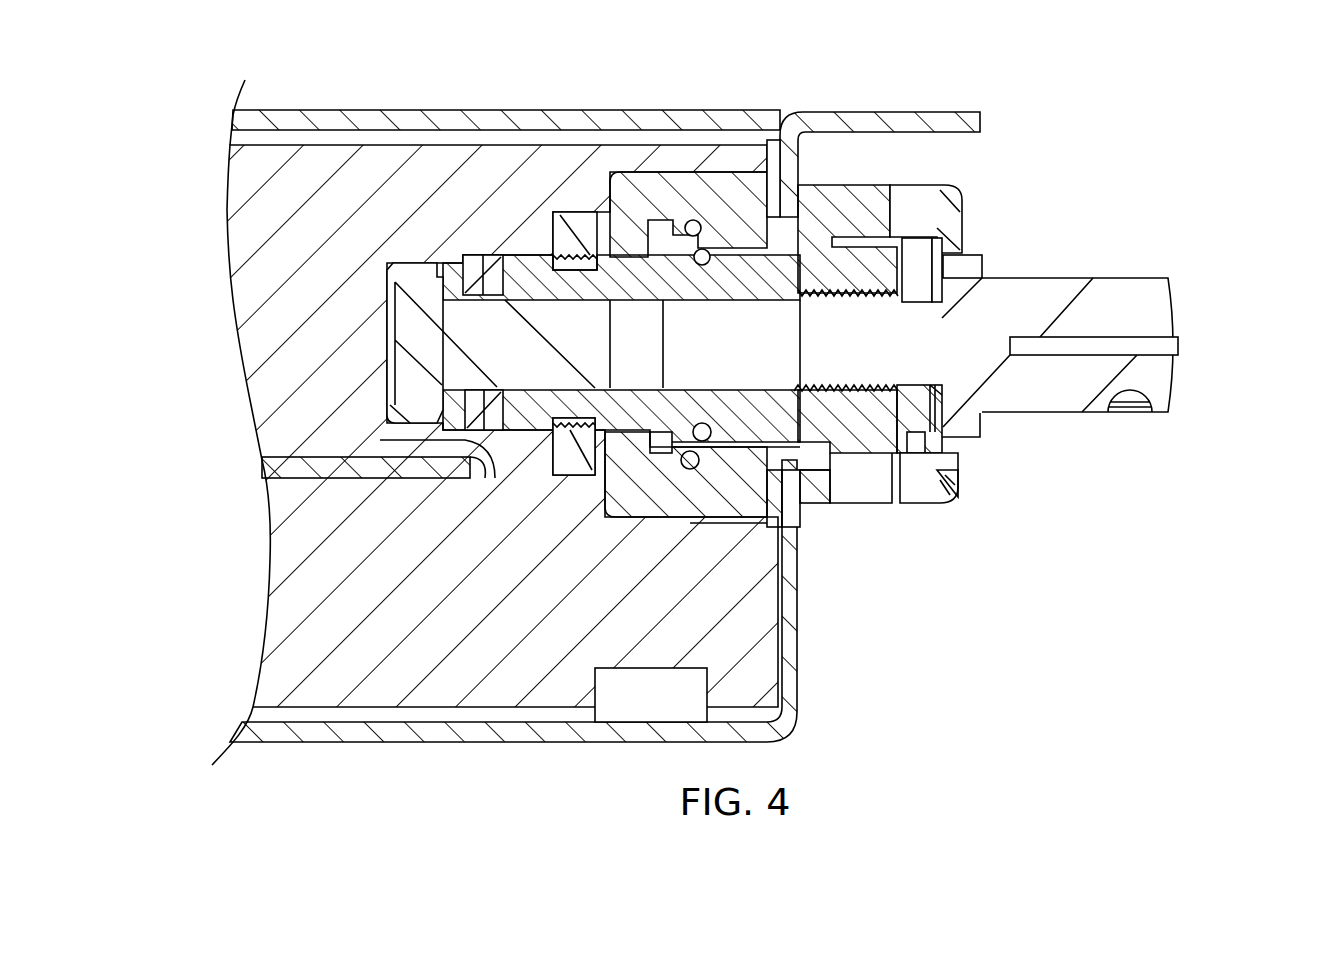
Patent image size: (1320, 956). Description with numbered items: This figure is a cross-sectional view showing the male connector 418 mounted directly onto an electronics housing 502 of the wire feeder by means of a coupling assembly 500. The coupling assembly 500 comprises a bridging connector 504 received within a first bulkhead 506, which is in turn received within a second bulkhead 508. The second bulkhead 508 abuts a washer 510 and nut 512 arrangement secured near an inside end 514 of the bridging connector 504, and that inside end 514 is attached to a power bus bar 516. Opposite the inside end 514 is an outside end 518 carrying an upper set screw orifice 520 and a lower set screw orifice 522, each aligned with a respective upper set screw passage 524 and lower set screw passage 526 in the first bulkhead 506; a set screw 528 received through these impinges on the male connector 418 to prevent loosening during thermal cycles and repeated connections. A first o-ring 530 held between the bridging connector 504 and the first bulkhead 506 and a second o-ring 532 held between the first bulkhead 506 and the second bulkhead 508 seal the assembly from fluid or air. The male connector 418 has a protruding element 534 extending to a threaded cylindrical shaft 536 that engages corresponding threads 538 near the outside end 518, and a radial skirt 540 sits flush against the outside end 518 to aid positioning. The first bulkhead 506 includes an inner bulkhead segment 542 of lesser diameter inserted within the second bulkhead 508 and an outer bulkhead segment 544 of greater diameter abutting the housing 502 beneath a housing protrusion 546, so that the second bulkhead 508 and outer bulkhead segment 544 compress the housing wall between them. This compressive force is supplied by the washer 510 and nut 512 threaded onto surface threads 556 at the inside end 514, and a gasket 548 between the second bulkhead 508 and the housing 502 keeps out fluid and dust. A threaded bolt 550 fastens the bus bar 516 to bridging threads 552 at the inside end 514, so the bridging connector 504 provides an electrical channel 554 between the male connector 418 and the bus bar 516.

The male connector 418 is at (1101, 327).
The coupling assembly 500 is at (986, 205).
The electronics housing 502 is at (800, 708).
The bridging connector 504 is at (878, 237).
The first bulkhead 506 is at (962, 480).
The second bulkhead 508 is at (657, 520).
The washer 510 is at (597, 467).
The nut 512 is at (574, 477).
The inside end 514 is at (527, 255).
The power bus bar 516 is at (272, 490).
The outside end 518 is at (950, 224).
The upper set screw orifice 520 is at (948, 250).
The lower set screw orifice 522 is at (945, 420).
The upper set screw passage 524 is at (918, 204).
The lower set screw passage 526 is at (927, 503).
The set screw 528 is at (902, 455).
The first o-ring 530 is at (720, 218).
The second o-ring 532 is at (688, 222).
The protruding element 534 is at (1172, 306).
The threaded cylindrical shaft 536 is at (880, 386).
The threads 538 is at (843, 392).
The radial skirt 540 is at (985, 262).
The inner bulkhead segment 542 is at (778, 520).
The outer bulkhead segment 544 is at (810, 188).
The housing protrusion 546 is at (895, 111).
The gasket 548 is at (792, 525).
The threaded bolt 550 is at (405, 432).
The bridging threads 552 is at (545, 432).
The electrical channel 554 is at (706, 462).
The surface threads 556 is at (560, 212).